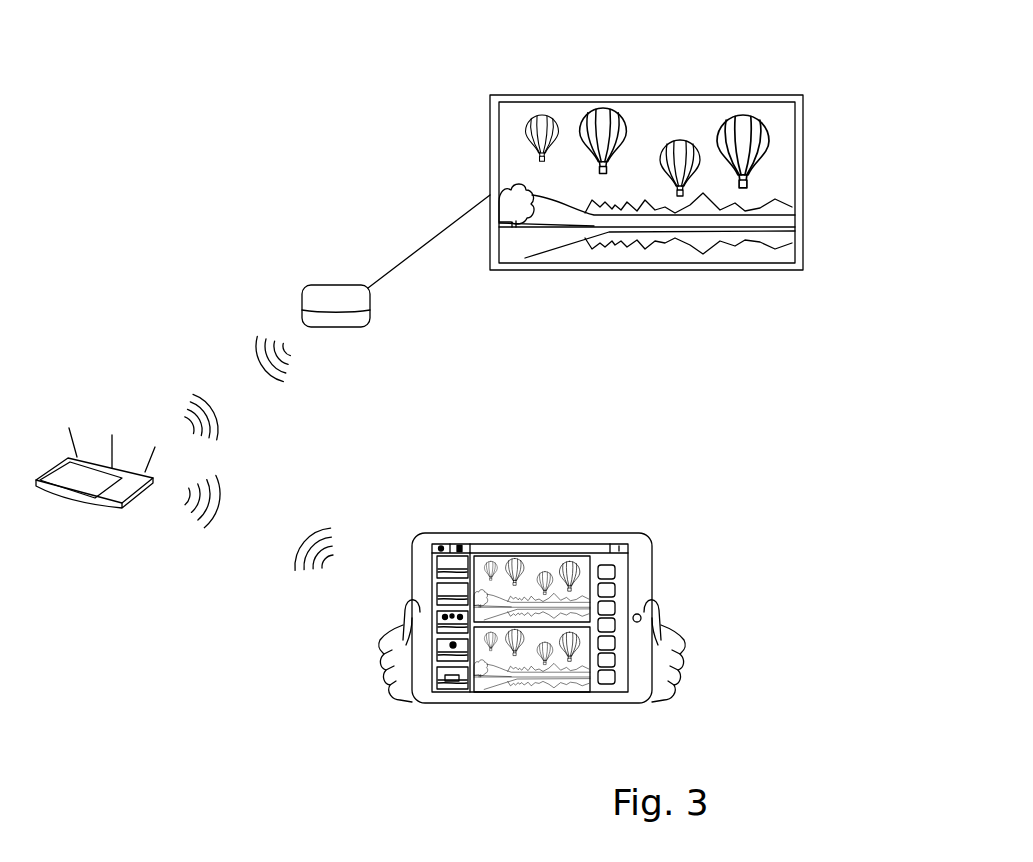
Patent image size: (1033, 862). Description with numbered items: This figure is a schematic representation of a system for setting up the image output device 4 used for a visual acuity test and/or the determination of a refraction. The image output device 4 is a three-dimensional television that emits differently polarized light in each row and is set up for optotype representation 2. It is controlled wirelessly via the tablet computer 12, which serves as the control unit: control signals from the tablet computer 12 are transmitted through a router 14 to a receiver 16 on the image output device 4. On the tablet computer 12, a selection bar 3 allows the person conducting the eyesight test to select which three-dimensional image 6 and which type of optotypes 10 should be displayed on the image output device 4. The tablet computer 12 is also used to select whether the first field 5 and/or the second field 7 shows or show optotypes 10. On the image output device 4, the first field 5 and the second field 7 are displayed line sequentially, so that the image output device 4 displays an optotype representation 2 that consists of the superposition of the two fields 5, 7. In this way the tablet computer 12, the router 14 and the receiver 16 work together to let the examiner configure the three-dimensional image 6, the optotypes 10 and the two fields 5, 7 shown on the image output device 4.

The optotype representation 2 is at (647, 183).
The image output device 4 is at (540, 95).
The optotypes 10 is at (681, 153).
The three-dimensional image 6 is at (547, 243).
The receiver 16 is at (328, 298).
The router 14 is at (113, 500).
The tablet computer 12 is at (532, 625).
The selection bar 3 is at (442, 690).
The first field 5 is at (547, 565).
The second field 7 is at (508, 668).